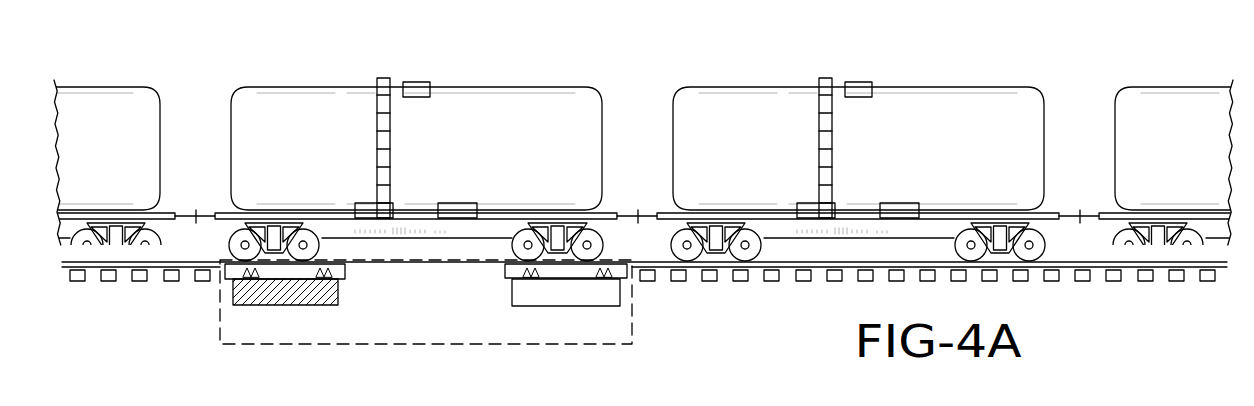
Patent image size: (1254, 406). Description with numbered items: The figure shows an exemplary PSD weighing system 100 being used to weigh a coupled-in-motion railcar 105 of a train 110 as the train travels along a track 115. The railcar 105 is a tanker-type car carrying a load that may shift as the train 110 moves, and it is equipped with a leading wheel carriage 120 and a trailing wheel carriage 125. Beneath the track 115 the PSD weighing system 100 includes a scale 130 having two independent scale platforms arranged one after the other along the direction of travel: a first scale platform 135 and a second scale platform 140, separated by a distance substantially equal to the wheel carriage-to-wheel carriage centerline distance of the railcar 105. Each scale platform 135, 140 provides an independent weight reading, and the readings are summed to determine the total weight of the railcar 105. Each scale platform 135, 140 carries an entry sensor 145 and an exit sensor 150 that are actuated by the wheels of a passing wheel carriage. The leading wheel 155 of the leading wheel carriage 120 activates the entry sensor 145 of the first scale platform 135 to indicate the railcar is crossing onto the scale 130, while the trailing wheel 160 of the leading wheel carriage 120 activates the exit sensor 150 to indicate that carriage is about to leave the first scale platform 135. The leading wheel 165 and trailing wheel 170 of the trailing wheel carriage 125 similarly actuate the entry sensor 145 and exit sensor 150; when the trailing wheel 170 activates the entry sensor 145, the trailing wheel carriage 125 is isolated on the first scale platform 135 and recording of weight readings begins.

The PSD weighing system 100 is at (492, 327).
The railcar 105 is at (627, 170).
The train 110 is at (1050, 62).
The track 115 is at (127, 267).
The leading wheel carriage 120 is at (561, 268).
The trailing wheel carriage 125 is at (291, 268).
The scale 130 is at (380, 355).
The first scale platform 135 is at (258, 297).
The second scale platform 140 is at (592, 297).
The entry sensor 145 is at (247, 272).
The exit sensor 150 is at (327, 277).
The leading wheel of the leading wheel carriage 155 is at (603, 243).
The trailing wheel of the leading wheel carriage 160 is at (522, 243).
The leading wheel of the trailing wheel carriage 165 is at (312, 243).
The trailing wheel of the trailing wheel carriage 170 is at (234, 243).